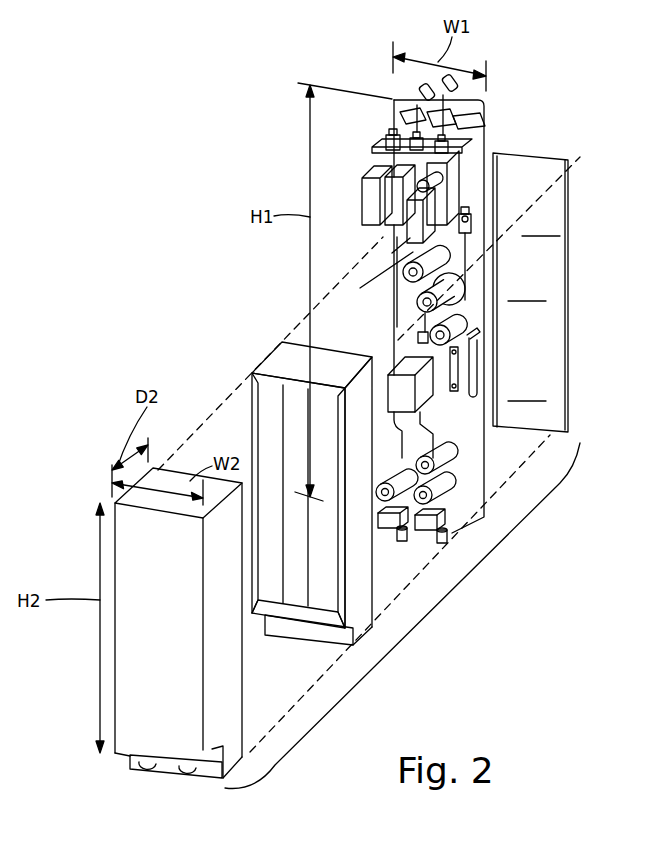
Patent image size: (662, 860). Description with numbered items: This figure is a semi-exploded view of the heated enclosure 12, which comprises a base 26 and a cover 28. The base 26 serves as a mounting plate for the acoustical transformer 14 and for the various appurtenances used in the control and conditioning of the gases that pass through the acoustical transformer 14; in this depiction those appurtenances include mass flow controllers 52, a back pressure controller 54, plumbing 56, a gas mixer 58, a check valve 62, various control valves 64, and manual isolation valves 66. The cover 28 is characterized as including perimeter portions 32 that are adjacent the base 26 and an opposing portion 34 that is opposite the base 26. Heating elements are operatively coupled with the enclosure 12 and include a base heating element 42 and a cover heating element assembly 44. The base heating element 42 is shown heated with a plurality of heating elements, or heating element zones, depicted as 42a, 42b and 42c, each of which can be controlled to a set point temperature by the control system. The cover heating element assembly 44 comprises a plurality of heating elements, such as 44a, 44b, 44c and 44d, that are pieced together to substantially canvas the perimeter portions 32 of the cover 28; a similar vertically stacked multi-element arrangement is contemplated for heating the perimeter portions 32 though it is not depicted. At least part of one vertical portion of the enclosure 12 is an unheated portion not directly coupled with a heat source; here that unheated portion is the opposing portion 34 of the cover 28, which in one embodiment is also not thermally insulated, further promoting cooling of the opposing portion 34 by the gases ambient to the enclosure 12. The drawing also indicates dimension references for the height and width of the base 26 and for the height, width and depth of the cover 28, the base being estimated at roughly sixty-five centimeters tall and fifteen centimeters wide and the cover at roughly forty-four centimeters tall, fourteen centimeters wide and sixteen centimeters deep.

The enclosure 12 is at (418, 636).
The acoustical transformer 14 is at (393, 370).
The base 26 is at (487, 484).
The cover 28 is at (110, 660).
The perimeter portions 32 is at (187, 449).
The opposing portion 34 is at (133, 697).
The base heating element 42 is at (570, 260).
The heating element zone 42a is at (541, 225).
The heating element zone 42b is at (527, 290).
The heating element zone 42c is at (527, 390).
The cover heating element assembly 44 is at (300, 333).
The heating element 44a is at (287, 360).
The heating element 44b is at (264, 406).
The heating element 44c is at (303, 614).
The heating element 44d is at (318, 648).
The mass flow controllers 52 is at (393, 205).
The back pressure controller 54 is at (468, 180).
The plumbing 56 is at (398, 290).
The gas mixer 58 is at (450, 300).
The check valve 62 is at (478, 331).
The control valves 64 is at (476, 222).
The manual isolation valves 66 is at (383, 529).